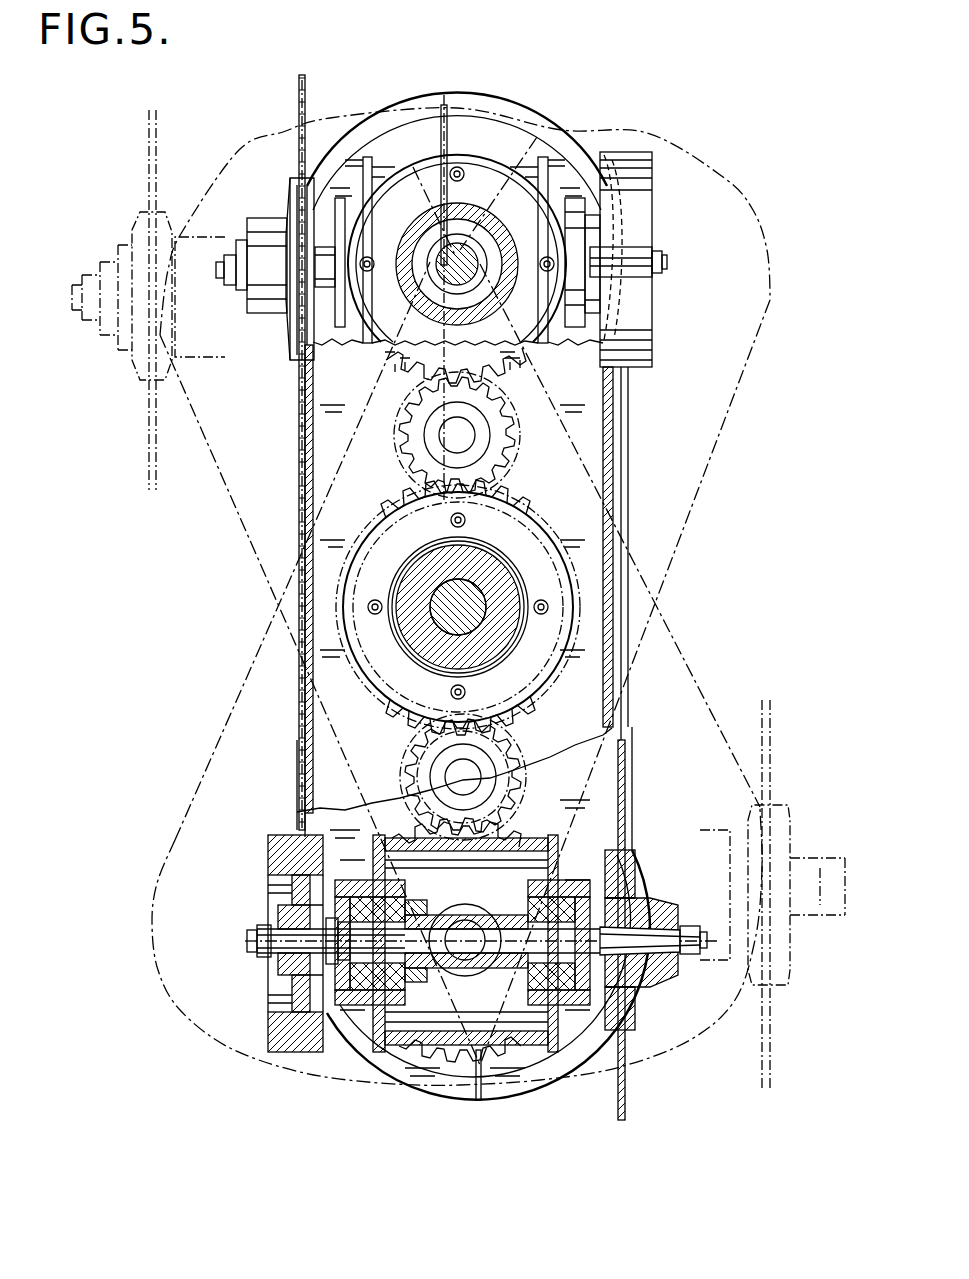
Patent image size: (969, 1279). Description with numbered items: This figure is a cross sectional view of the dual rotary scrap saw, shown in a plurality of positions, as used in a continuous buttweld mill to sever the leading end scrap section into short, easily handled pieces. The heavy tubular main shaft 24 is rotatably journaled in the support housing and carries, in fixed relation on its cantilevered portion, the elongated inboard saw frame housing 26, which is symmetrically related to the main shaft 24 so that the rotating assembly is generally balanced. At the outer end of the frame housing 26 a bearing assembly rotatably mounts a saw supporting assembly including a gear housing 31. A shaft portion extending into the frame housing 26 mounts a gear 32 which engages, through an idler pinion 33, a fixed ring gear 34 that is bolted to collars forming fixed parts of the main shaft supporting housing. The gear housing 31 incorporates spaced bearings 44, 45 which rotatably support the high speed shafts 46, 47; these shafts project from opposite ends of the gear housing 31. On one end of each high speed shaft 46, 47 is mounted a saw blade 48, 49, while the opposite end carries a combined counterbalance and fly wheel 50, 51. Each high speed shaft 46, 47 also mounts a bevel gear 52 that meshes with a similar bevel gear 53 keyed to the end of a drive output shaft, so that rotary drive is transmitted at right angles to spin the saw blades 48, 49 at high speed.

The main shaft 24 is at (492, 582).
The inboard saw frame housing 26 is at (625, 430).
The gear housing 31 is at (525, 172).
The gear 32 is at (512, 360).
The idler pinion 33 is at (525, 432).
The ring gear 34 is at (400, 532).
The bearing 44 is at (352, 330).
The bearing 45 is at (588, 308).
The high speed shaft 46 is at (655, 932).
The high speed shaft 47 is at (600, 258).
The saw blade 48 is at (623, 773).
The saw blade 49 is at (150, 160).
The combined counterbalance and fly wheel 50 is at (285, 860).
The combined counterbalance and fly wheel 51 is at (632, 216).
The bevel gear 52 is at (380, 985).
The bevel gear 53 is at (490, 962).